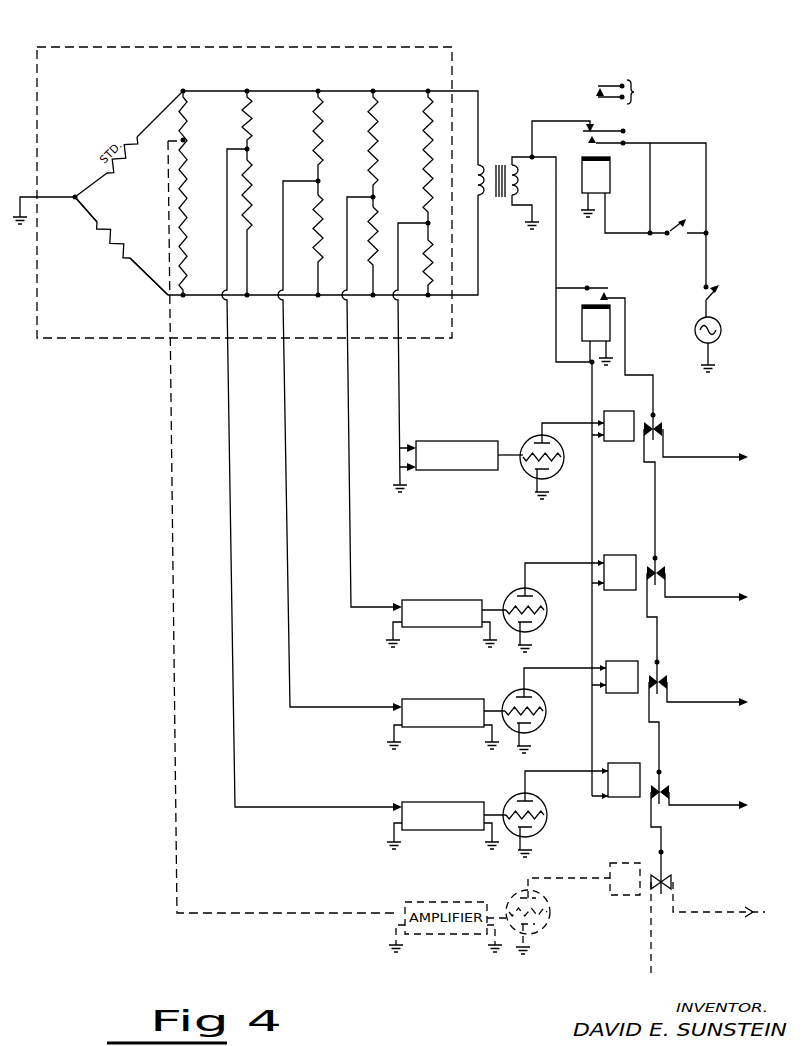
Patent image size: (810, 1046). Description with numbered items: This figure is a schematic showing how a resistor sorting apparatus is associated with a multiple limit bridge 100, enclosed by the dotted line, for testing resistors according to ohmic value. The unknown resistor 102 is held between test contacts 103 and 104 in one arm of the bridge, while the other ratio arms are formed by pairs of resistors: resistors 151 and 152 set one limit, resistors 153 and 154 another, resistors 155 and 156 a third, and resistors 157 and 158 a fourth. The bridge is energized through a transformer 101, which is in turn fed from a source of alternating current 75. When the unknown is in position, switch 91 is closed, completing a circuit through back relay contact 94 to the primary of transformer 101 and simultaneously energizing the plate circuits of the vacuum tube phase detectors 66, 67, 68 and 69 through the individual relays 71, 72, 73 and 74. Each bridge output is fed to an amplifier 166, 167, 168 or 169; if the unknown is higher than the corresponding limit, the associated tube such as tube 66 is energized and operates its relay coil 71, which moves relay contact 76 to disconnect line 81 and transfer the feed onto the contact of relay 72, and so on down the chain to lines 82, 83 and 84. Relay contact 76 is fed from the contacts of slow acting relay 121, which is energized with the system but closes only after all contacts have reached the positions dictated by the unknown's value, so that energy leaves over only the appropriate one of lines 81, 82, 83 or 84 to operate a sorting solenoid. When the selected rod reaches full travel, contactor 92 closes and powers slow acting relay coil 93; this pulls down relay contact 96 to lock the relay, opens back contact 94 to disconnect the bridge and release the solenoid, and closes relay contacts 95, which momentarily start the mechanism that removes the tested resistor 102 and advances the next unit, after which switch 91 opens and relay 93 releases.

The multiple limit bridge 100 is at (437, 44).
The transformer 101 is at (510, 205).
The resistor 102 is at (110, 247).
The test contact 103 is at (97, 226).
The test contact 104 is at (130, 264).
The slow acting relay 121 is at (583, 326).
The resistor 151 is at (252, 183).
The resistor 152 is at (253, 113).
The resistor 153 is at (325, 212).
The resistor 154 is at (324, 111).
The resistor 155 is at (383, 218).
The resistor 156 is at (379, 111).
The resistor 157 is at (425, 262).
The resistor 158 is at (433, 97).
The amplifier 166 is at (455, 441).
The amplifier 167 is at (428, 600).
The amplifier 168 is at (428, 699).
The amplifier 169 is at (430, 802).
The vacuum tube phase detector 66 is at (527, 437).
The vacuum tube phase detector 67 is at (510, 592).
The vacuum tube phase detector 68 is at (510, 700).
The vacuum tube phase detector 69 is at (510, 805).
The relay coil 71 is at (624, 441).
The relay 72 is at (634, 590).
The relay 73 is at (636, 693).
The relay 74 is at (636, 797).
The source of alternating current 75 is at (722, 330).
The relay contact 76 is at (655, 416).
The line 81 is at (760, 457).
The line 82 is at (760, 596).
The line 83 is at (762, 702).
The line 84 is at (762, 805).
The switch 91 is at (721, 294).
The contactor 92 is at (679, 237).
The relay coil 93 is at (590, 178).
The back relay contact 94 is at (592, 121).
The relay contacts 95 is at (618, 88).
The relay contact 96 is at (598, 136).